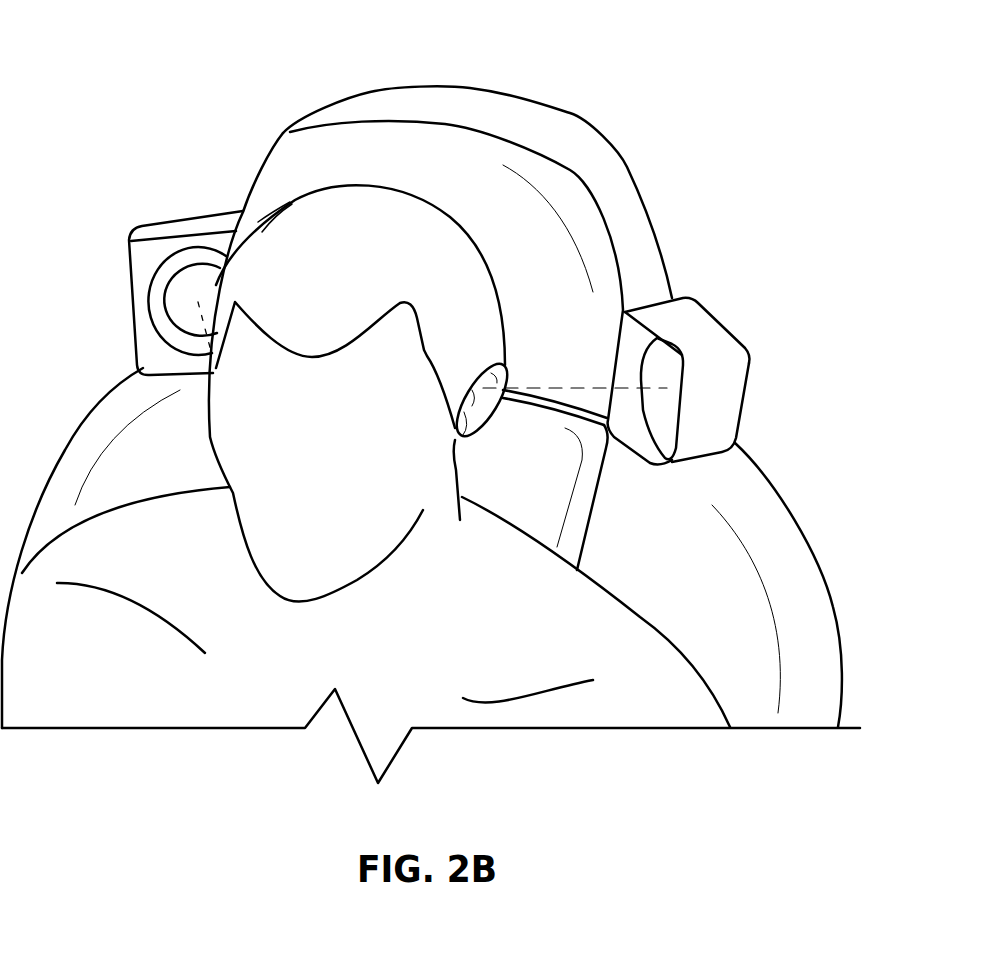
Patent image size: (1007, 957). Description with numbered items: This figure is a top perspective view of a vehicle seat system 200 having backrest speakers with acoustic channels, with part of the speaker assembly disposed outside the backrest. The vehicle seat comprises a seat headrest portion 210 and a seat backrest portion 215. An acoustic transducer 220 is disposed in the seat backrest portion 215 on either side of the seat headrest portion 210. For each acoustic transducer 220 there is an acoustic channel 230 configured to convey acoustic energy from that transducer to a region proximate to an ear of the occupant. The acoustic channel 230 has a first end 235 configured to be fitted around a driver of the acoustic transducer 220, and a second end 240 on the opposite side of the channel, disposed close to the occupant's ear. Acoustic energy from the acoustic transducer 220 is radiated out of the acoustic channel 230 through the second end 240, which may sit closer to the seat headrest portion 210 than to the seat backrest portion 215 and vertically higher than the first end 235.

The vehicle seat system 200 is at (119, 76).
The seat headrest portion 210 is at (620, 210).
The seat backrest portion 215 is at (715, 630).
The acoustic transducer 220 is at (679, 356).
The acoustic channel 230 is at (700, 408).
The first end 235 is at (738, 433).
The second end 240 is at (707, 462).